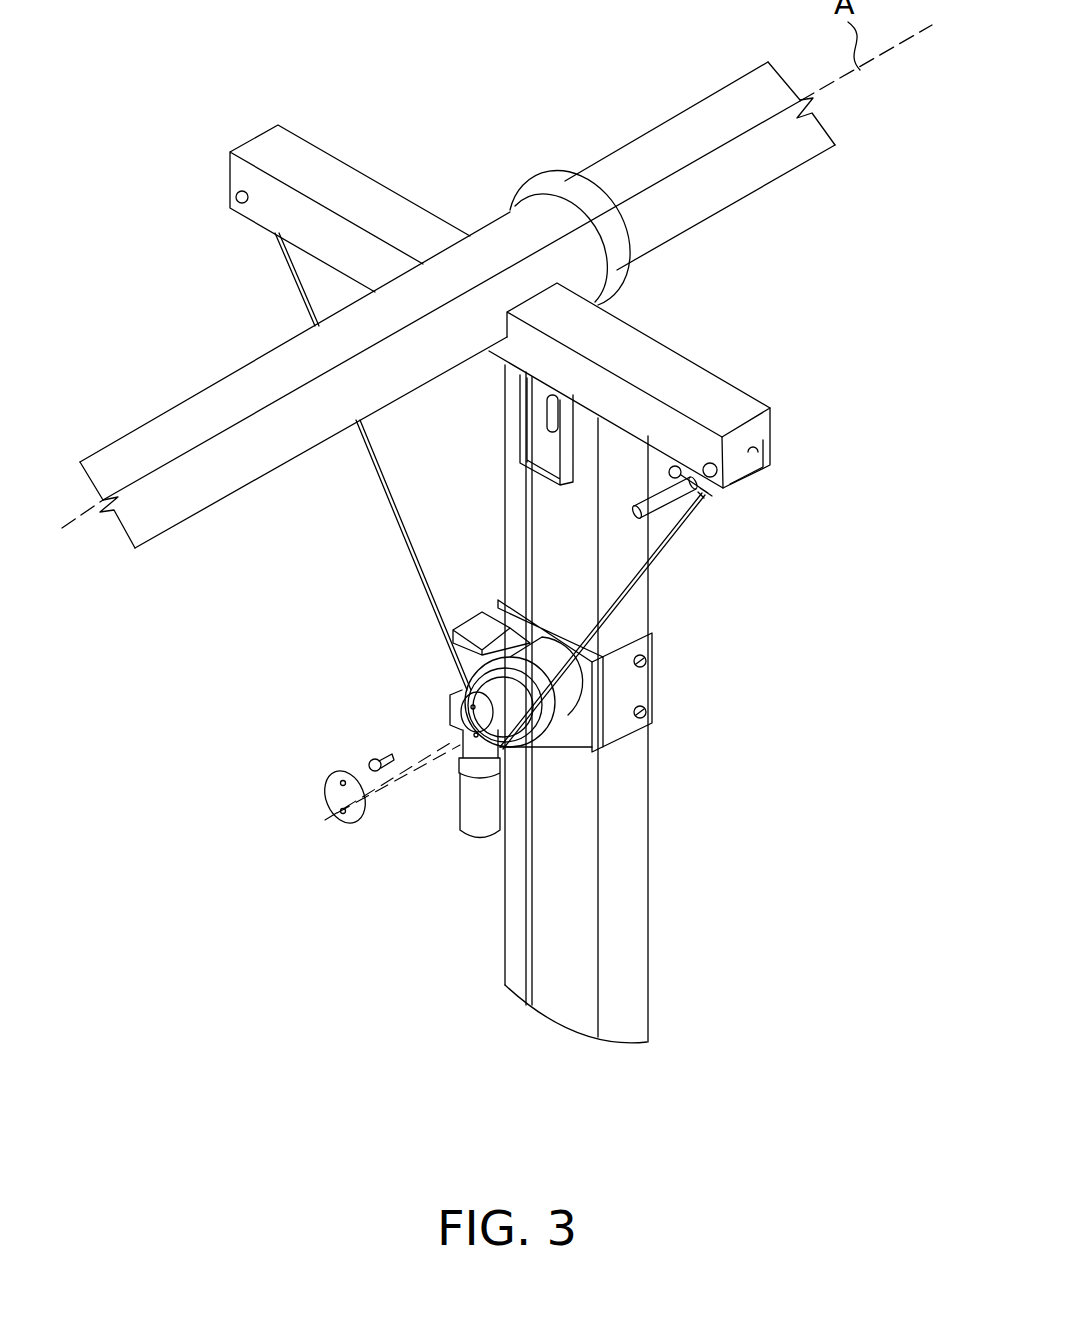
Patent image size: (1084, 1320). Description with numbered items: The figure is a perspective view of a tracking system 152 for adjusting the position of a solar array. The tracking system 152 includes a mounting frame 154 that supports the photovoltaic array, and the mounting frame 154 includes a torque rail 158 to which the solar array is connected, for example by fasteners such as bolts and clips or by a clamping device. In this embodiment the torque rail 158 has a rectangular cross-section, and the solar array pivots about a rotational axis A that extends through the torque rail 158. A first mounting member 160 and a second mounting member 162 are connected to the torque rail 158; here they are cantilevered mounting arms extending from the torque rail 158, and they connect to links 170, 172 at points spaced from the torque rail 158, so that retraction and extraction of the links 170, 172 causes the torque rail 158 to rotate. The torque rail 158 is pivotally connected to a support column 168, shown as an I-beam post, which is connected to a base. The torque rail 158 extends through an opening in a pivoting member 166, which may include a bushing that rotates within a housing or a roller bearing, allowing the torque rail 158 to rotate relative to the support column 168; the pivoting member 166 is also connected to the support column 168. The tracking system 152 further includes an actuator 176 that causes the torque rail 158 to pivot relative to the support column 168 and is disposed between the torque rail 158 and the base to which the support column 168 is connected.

The tracking system 152 is at (795, 889).
The mounting frame 154 is at (412, 165).
The torque rail 158 is at (217, 412).
The first mounting member 160 is at (293, 215).
The second mounting member 162 is at (617, 347).
The pivoting member 166 is at (557, 195).
The support column 168 is at (580, 907).
The link 170 is at (385, 522).
The link 172 is at (658, 552).
The actuator 176 is at (558, 697).